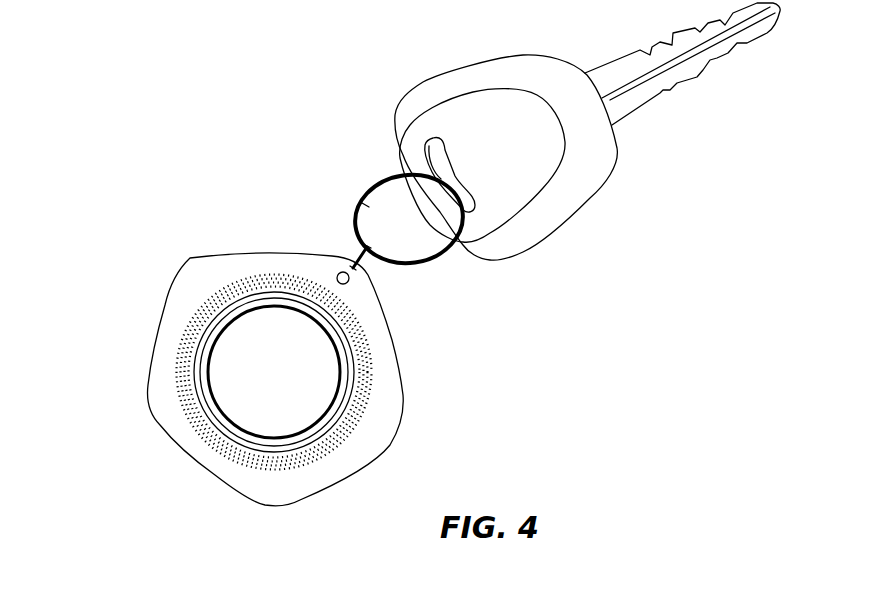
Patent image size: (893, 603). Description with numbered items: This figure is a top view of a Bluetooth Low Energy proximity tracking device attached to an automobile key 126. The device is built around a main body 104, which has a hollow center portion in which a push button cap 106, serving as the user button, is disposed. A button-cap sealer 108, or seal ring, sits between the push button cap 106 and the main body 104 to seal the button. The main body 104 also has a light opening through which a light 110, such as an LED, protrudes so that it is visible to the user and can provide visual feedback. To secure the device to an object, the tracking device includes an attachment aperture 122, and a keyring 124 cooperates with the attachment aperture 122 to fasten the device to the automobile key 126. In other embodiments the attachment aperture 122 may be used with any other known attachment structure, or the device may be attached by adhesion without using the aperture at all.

The main body 104 is at (162, 380).
The push button cap 106 is at (305, 388).
The button-cap sealer 108 is at (202, 408).
The light 110 is at (343, 271).
The attachment aperture 122 is at (360, 275).
The keyring 124 is at (356, 205).
The automobile key 126 is at (577, 188).